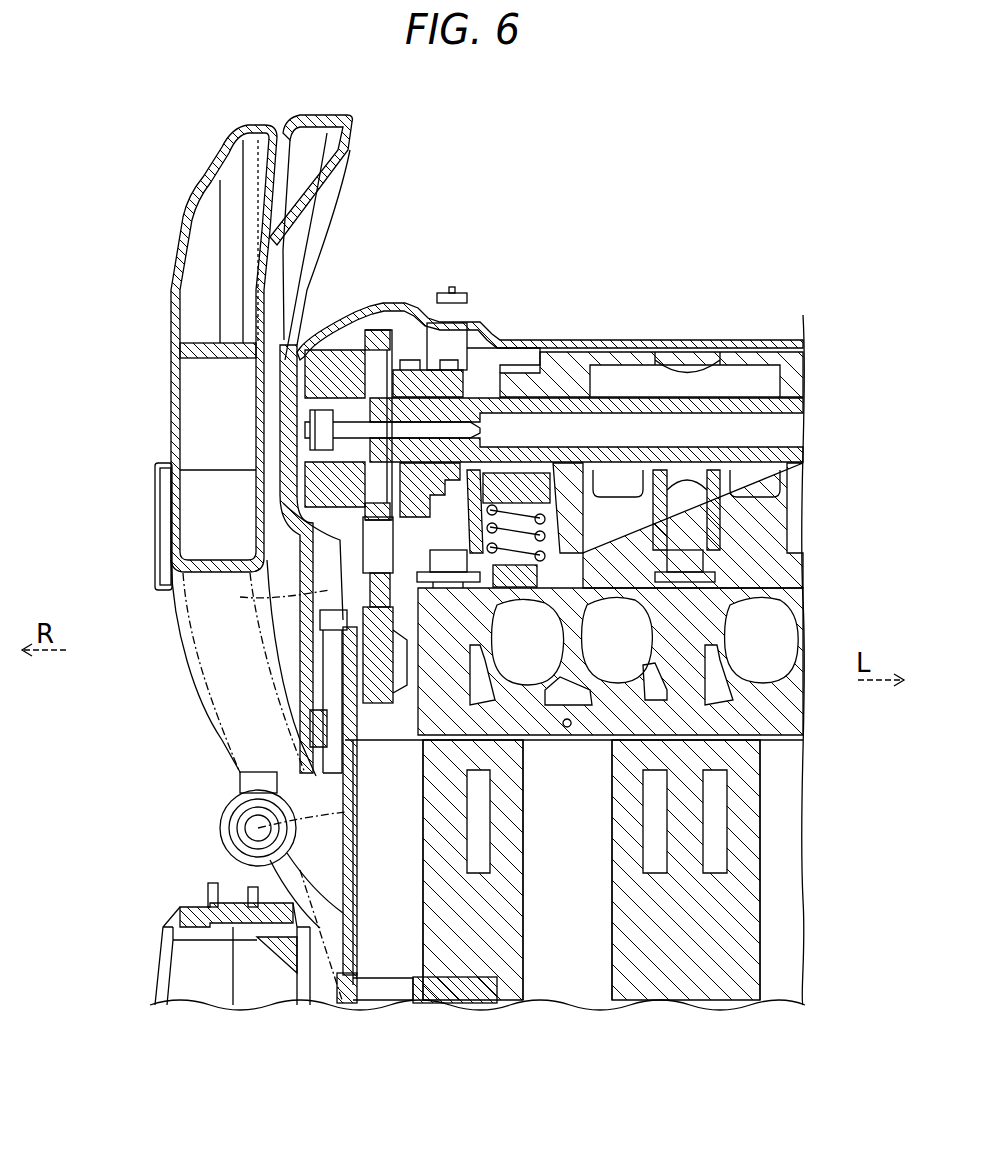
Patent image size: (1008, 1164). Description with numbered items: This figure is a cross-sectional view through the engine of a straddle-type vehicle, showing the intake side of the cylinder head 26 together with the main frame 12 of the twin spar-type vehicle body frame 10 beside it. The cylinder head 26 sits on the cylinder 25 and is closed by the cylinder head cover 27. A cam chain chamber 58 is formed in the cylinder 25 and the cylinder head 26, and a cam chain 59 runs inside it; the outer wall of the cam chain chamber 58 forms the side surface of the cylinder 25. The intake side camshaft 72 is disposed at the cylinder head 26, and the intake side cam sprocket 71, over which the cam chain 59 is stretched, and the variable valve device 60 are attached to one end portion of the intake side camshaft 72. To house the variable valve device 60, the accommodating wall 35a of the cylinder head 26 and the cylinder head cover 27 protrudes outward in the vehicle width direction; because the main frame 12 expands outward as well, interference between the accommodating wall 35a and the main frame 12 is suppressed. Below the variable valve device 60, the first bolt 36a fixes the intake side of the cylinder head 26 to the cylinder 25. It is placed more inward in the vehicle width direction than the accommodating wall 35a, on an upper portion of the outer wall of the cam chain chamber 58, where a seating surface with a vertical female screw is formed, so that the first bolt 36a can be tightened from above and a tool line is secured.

The vehicle body frame 10 is at (175, 160).
The main frame 12 is at (190, 215).
The cylinder 25 is at (258, 828).
The cylinder head 26 is at (330, 590).
The cylinder head cover 27 is at (388, 298).
The accommodating wall 35a is at (290, 480).
The first bolt 36a is at (335, 655).
The cam chain chamber 58 is at (403, 885).
The cam chain 59 is at (375, 540).
The variable valve device 60 is at (347, 362).
The intake side cam sprocket 71 is at (406, 355).
The intake side camshaft 72 is at (640, 395).